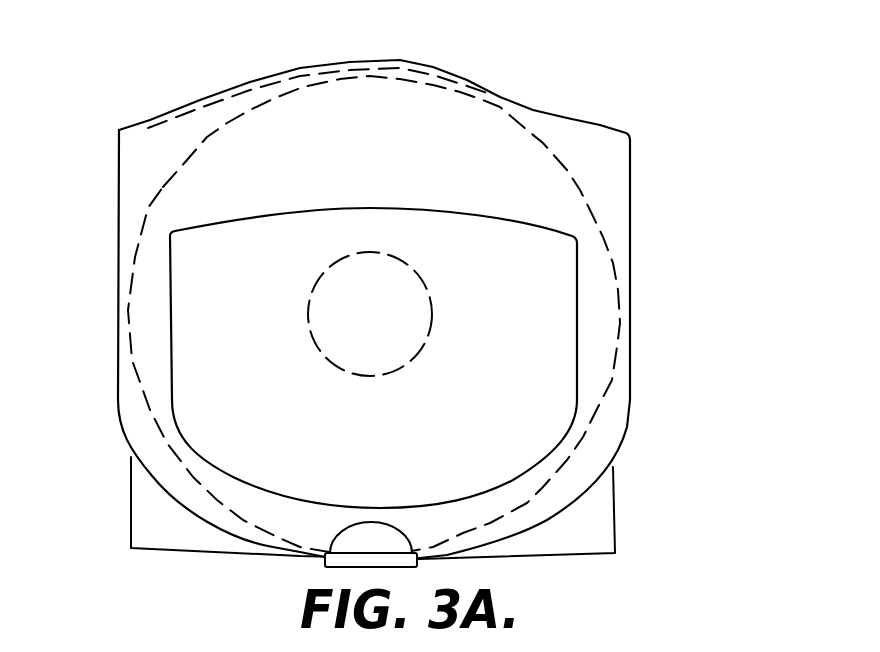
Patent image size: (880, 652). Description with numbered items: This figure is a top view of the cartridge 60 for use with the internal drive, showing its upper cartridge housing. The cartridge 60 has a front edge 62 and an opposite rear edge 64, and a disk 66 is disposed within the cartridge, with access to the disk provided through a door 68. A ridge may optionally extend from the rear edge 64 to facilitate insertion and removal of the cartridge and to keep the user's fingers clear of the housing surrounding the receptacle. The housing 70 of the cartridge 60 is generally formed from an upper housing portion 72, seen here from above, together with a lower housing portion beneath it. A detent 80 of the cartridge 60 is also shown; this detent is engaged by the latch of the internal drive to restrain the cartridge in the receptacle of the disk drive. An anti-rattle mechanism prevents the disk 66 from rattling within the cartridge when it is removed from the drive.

The cartridge 60 is at (427, 309).
The front edge 62 is at (583, 117).
The rear edge 64 is at (561, 559).
The disk 66 is at (160, 182).
The door 68 is at (310, 67).
The housing 70 is at (633, 221).
The upper housing portion 72 is at (620, 377).
The detent 80 is at (322, 554).